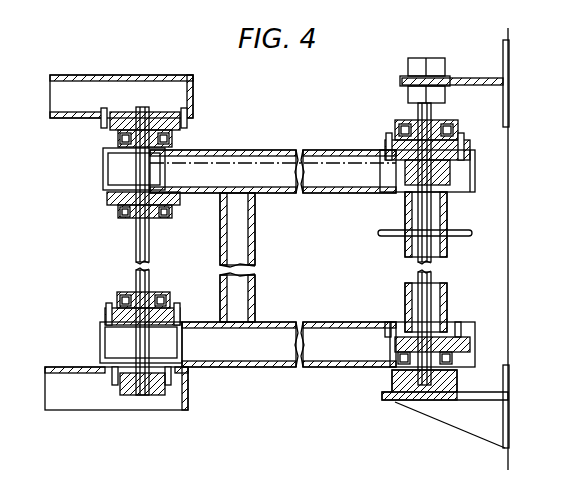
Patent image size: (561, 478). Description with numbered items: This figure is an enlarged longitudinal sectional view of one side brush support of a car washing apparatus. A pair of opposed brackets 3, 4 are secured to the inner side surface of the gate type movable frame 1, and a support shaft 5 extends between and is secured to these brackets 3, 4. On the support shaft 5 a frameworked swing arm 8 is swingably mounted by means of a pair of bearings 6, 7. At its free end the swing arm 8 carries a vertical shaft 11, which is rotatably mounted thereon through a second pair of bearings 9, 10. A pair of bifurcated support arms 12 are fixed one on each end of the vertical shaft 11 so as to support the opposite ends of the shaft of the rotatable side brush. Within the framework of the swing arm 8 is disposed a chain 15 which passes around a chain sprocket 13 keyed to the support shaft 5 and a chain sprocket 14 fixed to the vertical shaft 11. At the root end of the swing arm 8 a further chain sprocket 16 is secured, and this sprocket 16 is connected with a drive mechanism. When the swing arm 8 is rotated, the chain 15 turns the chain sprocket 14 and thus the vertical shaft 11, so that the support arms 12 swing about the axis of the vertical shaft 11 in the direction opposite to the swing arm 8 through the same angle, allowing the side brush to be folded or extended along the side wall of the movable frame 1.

The movable frame 1 is at (510, 322).
The bracket 3 is at (503, 66).
The bracket 4 is at (445, 414).
The support shaft 5 is at (435, 276).
The bearing 6 is at (450, 126).
The bearing 7 is at (390, 341).
The swing arm 8 is at (325, 150).
The bearing 9 is at (178, 141).
The bearing 10 is at (117, 296).
The vertical shaft 11 is at (137, 242).
The bifurcated support arm 12 is at (134, 75).
The chain sprocket 13 is at (455, 175).
The chain sprocket 14 is at (130, 170).
The chain 15 is at (235, 160).
The chain sprocket 16 is at (455, 239).